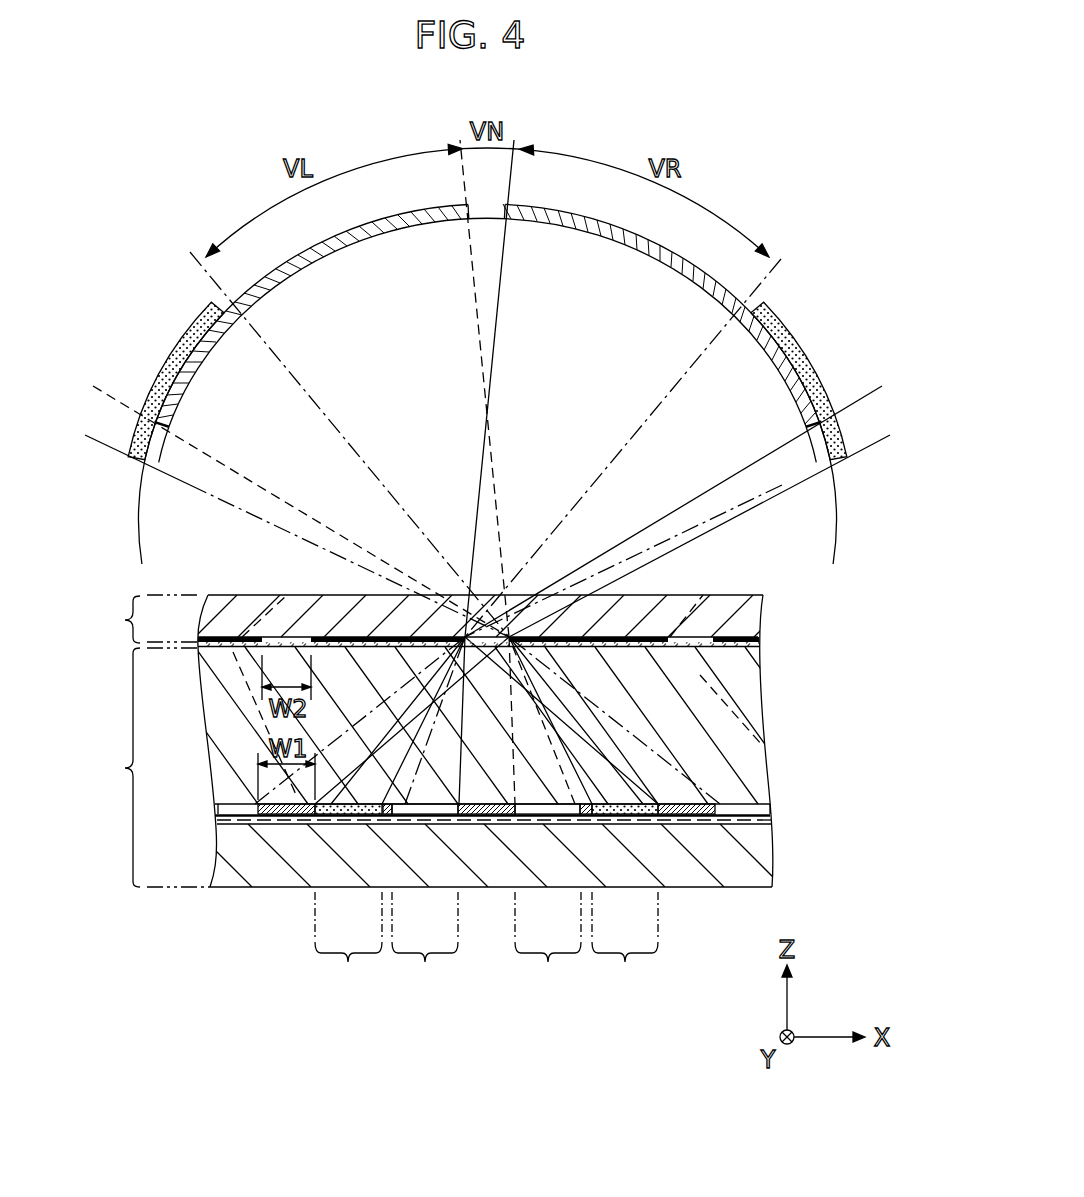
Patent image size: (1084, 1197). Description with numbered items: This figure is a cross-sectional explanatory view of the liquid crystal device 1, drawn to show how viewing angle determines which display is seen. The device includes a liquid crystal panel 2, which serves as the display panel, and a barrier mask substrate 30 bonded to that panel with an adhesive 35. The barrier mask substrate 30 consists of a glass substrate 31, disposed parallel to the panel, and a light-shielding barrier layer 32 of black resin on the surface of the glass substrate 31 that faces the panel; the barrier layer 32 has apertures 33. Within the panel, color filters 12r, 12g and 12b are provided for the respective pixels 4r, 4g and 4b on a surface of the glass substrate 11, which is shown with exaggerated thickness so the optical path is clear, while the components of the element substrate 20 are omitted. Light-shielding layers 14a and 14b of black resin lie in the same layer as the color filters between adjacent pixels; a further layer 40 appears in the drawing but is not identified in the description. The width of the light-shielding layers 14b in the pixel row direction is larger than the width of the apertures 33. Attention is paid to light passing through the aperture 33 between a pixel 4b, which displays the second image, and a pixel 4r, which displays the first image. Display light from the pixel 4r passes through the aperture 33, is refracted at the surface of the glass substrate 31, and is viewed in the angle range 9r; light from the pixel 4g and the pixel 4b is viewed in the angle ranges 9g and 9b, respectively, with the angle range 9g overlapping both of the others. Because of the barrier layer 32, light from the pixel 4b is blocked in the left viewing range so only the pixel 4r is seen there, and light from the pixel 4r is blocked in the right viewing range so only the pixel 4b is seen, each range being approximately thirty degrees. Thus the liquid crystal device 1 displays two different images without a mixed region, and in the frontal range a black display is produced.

The liquid crystal device 1 is at (747, 565).
The liquid crystal panel 2 is at (436, 741).
The barrier mask substrate 30 is at (145, 619).
The glass substrate 31 is at (757, 613).
The adhesive 35 is at (747, 647).
The apertures 33 is at (679, 636).
The light-shielding barrier layer 32 is at (708, 648).
The glass substrate 11 is at (750, 725).
The light emitting element layer 40 is at (765, 818).
The element substrate 20 is at (765, 862).
The color filter 12g is at (340, 815).
The color filter 12b is at (435, 815).
The color filter 12r is at (540, 815).
The light-shielding layer 14a is at (387, 815).
The light-shielding layer 14b is at (487, 815).
The angle range 9r is at (351, 244).
The angle range 9b is at (619, 244).
The angle range 9g is at (168, 360).
The pixel 4g is at (487, 946).
The pixel 4b is at (425, 946).
The pixel 4r is at (548, 946).